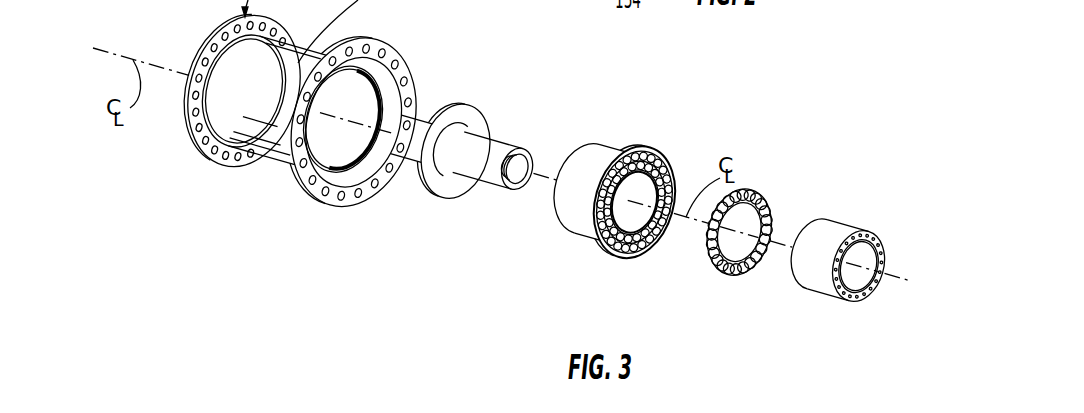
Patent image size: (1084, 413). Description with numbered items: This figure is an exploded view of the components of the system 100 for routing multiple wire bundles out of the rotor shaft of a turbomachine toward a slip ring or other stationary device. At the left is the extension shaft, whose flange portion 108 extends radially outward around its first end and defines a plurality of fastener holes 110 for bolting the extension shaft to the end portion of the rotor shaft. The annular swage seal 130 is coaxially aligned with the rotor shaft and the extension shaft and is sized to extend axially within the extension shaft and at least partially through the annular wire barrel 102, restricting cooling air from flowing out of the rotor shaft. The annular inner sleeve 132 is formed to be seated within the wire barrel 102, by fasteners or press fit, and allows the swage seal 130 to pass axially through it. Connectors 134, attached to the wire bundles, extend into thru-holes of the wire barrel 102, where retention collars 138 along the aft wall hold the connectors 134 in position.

The system 100 is at (450, 250).
The wire barrel 102 is at (614, 179).
The flange portion 108 is at (280, 124).
The fastener holes 110 is at (203, 112).
The swage seal 130 is at (478, 94).
The inner sleeve 132 is at (831, 226).
The connectors 134 is at (610, 152).
The retention collars 138 is at (703, 240).